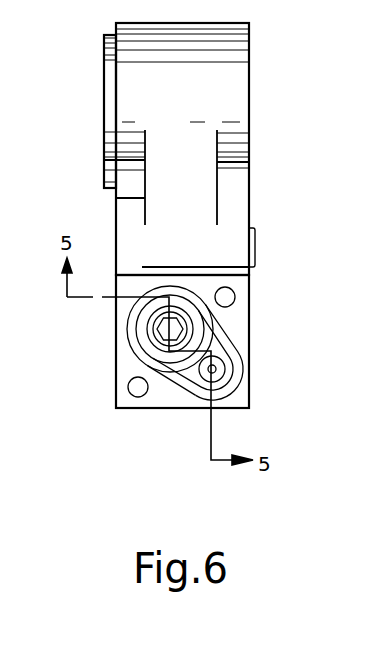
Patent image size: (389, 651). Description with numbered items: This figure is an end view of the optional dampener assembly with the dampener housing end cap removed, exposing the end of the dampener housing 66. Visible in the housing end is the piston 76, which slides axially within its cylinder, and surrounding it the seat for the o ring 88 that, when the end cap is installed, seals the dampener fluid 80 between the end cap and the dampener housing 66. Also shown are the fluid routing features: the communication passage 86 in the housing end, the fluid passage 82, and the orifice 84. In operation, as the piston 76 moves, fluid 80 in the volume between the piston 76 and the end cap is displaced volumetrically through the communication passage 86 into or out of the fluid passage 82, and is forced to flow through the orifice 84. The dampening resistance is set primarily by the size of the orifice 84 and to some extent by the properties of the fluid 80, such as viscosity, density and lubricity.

The dampener housing 66 is at (116, 385).
The piston 76 is at (153, 333).
The fluid 80 is at (208, 334).
The fluid passage 82 is at (225, 360).
The orifice 84 is at (216, 369).
The communication passage 86 is at (213, 347).
The o ring 88 is at (177, 394).